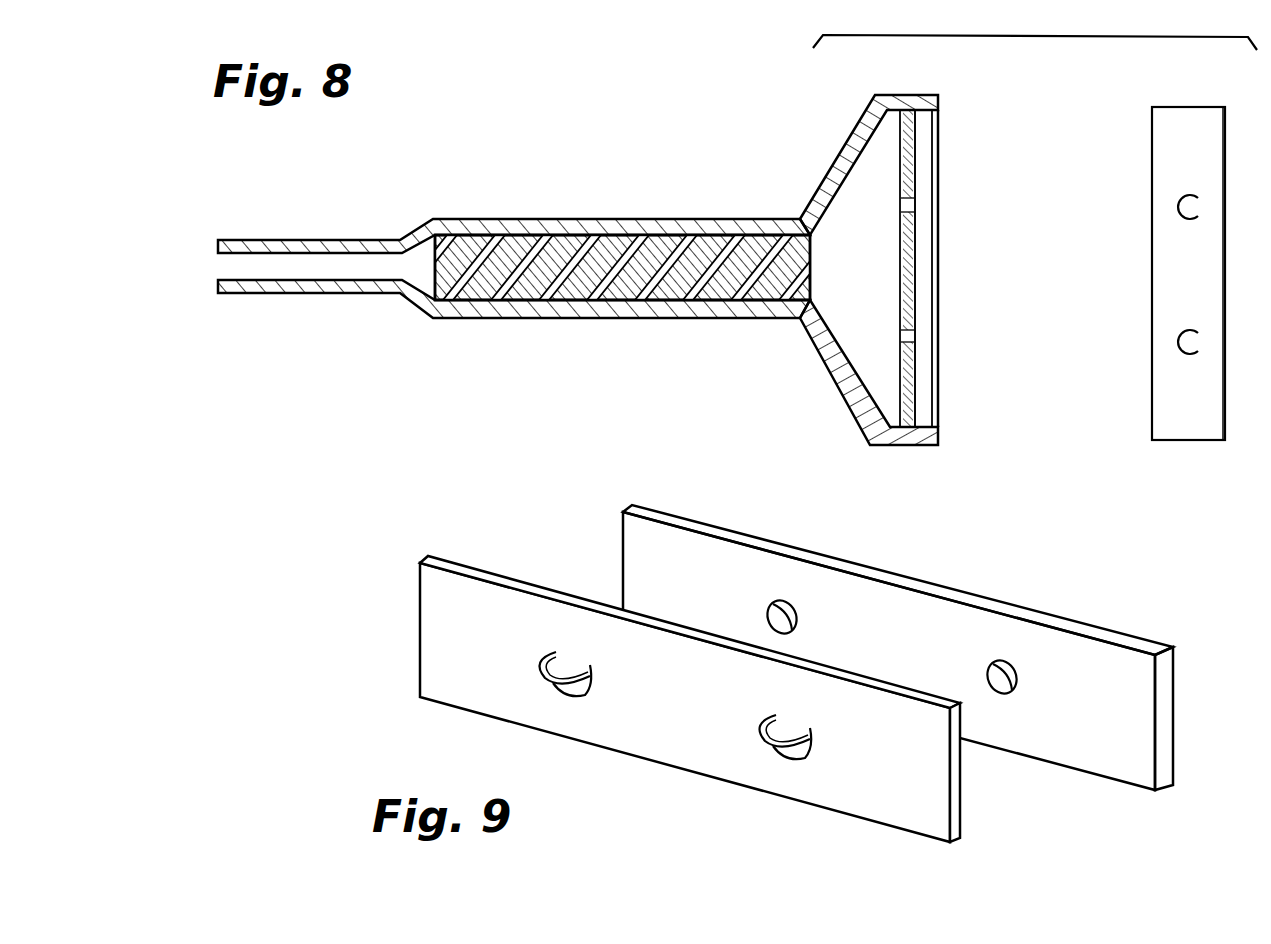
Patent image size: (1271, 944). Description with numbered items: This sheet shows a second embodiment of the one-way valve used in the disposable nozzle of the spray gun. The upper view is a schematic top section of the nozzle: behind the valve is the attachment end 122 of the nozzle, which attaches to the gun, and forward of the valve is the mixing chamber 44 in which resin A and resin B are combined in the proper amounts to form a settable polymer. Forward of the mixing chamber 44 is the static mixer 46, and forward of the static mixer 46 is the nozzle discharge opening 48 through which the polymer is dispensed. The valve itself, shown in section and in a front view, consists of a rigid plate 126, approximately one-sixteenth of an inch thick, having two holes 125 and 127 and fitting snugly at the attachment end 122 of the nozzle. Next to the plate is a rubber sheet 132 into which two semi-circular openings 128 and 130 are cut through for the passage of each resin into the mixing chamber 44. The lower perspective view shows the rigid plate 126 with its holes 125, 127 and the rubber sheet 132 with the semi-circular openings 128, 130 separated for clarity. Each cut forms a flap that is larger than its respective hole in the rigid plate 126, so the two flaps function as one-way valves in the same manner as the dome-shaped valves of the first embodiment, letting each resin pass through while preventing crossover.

In FIG. 8, the mixing chamber 44 is at (882, 278).
In FIG. 8, the static mixer 46 is at (517, 238).
In FIG. 8, the nozzle discharge opening 48 is at (222, 264).
In FIG. 8, the attachment end of the nozzle 122 is at (938, 113).
In FIG. 8, the hole 125 is at (913, 205).
In FIG. 9, the hole 125 is at (782, 600).
In FIG. 8, the rigid plate 126 is at (913, 143).
In FIG. 9, the rigid plate 126 is at (636, 504).
In FIG. 8, the hole 127 is at (913, 338).
In FIG. 9, the hole 127 is at (1000, 660).
In FIG. 8, the semi-circular opening 128 is at (1175, 213).
In FIG. 9, the semi-circular opening 128 is at (572, 692).
In FIG. 8, the semi-circular opening 130 is at (1175, 348).
In FIG. 9, the semi-circular opening 130 is at (793, 757).
In FIG. 8, the rubber sheet 132 is at (900, 378).
In FIG. 9, the rubber sheet 132 is at (425, 556).